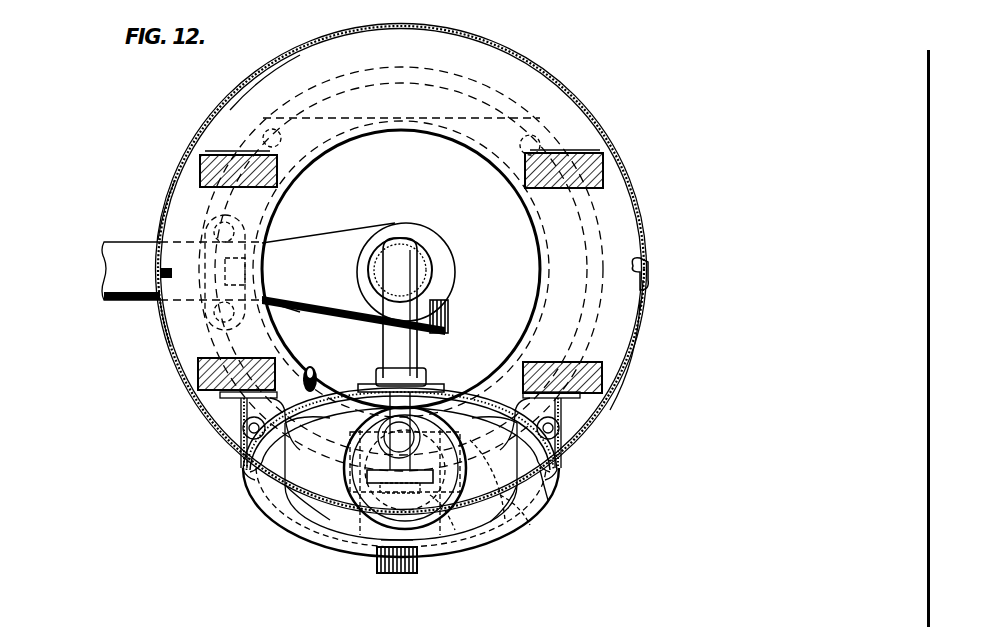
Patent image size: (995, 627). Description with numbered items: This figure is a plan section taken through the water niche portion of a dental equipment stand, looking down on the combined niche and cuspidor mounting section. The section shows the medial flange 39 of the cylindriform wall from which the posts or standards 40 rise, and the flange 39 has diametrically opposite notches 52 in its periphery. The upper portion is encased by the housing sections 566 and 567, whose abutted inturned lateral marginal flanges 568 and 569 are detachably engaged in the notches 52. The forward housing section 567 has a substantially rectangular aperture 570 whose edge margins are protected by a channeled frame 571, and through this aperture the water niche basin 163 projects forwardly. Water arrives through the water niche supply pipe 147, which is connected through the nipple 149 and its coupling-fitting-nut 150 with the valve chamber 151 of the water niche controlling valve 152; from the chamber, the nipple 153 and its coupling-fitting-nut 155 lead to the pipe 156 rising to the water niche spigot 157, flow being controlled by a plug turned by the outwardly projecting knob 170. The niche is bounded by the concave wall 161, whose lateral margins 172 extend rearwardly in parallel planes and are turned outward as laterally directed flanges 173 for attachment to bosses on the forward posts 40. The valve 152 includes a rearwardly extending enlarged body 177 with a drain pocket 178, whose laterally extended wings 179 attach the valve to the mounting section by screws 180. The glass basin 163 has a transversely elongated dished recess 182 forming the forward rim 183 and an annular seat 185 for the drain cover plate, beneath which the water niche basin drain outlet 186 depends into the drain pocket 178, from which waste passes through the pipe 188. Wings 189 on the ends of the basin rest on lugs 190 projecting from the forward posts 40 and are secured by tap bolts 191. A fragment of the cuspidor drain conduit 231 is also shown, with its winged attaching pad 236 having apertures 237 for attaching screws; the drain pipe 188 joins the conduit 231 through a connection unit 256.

The medial flange 39 is at (238, 107).
The posts or standards 40 is at (200, 172).
The notches 52 is at (166, 277).
The water niche supply pipe 147 is at (316, 357).
The nipple 149 is at (400, 520).
The coupling-fitting-nut 150 is at (352, 520).
The valve chamber 151 is at (428, 535).
The water niche controlling valve 152 is at (478, 545).
The nipple 153 is at (508, 535).
The coupling-fitting-nut 155 is at (530, 522).
The pipe 156 is at (476, 389).
The water niche spigot 157 is at (410, 500).
The concave wall 161 is at (555, 478).
The water niche basin 163 is at (295, 540).
The knob 170 is at (393, 575).
The lateral margins 172 is at (252, 426).
The laterally directed flanges 173 is at (240, 404).
The enlarged body 177 is at (385, 370).
The drain pocket 178 is at (438, 392).
The wings 179 is at (256, 500).
The screws 180 is at (283, 520).
The dished recess 182 is at (556, 500).
The forward rim 183 is at (468, 556).
The annular seat 185 is at (340, 535).
The water niche basin drain outlet 186 is at (392, 383).
The pipe 188 is at (400, 288).
The wings 189 is at (250, 440).
The lugs 190 is at (222, 396).
The tap bolts 191 is at (268, 456).
The drain conduit 231 is at (108, 268).
The winged attaching pad 236 is at (262, 222).
The apertures 237 is at (264, 328).
The connection unit 256 is at (398, 248).
The housing section 566 is at (583, 107).
The forward housing section 567 is at (646, 318).
The inturned lateral marginal flange 568 is at (160, 234).
The inturned lateral marginal flange 569 is at (158, 316).
The rectangular aperture 570 is at (560, 470).
The channeled frame 571 is at (245, 470).